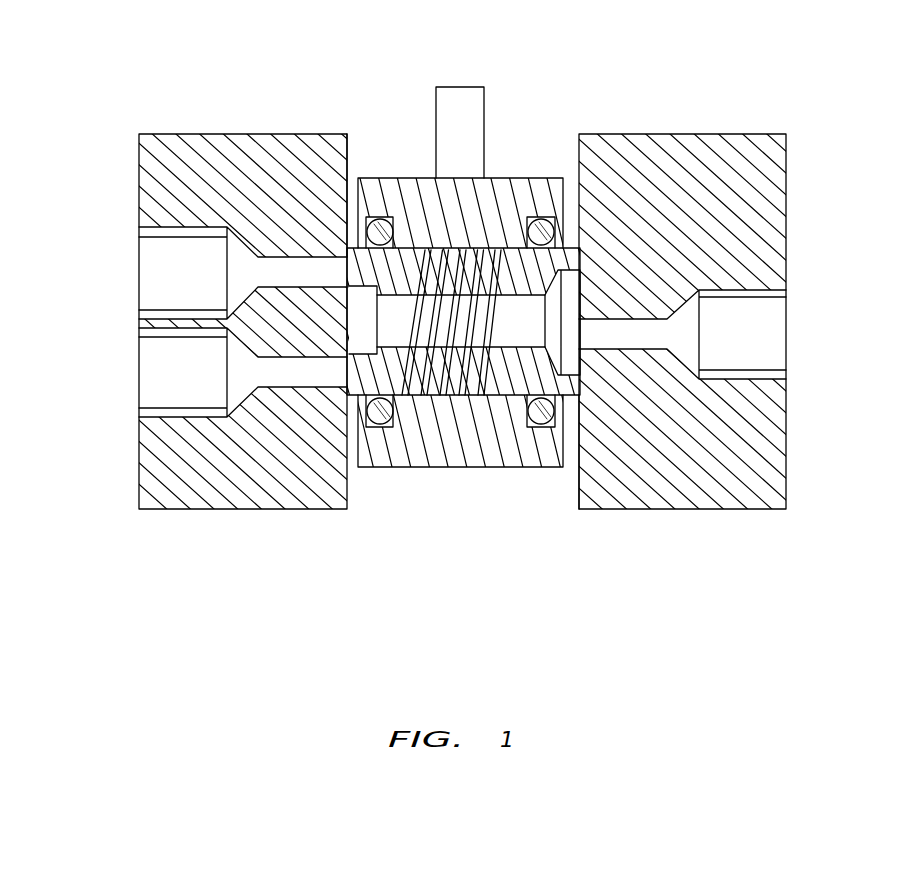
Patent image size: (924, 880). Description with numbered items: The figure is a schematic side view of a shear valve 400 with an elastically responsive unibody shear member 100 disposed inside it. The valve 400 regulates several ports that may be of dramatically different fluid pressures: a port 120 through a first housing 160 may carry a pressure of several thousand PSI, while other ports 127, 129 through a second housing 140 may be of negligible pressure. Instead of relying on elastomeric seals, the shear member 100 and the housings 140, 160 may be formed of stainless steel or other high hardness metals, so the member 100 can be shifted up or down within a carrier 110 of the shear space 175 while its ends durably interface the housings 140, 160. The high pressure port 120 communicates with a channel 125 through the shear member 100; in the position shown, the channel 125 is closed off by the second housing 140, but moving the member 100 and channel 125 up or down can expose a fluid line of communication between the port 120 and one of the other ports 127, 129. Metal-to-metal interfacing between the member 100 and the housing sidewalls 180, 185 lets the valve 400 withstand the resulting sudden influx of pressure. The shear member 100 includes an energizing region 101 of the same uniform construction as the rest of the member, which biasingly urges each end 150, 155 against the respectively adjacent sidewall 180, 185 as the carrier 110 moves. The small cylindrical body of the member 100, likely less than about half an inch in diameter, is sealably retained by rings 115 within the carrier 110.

The shear valve 400 is at (822, 63).
The elastically responsive unibody shear member 100 is at (418, 265).
The energizing region 101 is at (495, 246).
The carrier 110 is at (480, 450).
The rings 115 is at (541, 220).
The port 120 is at (773, 340).
The channel 125 is at (542, 334).
The port 127 is at (148, 271).
The port 129 is at (148, 378).
The second housing 140 is at (212, 493).
The end 150 is at (362, 378).
The end 155 is at (568, 377).
The first housing 160 is at (688, 490).
The shear space 175 is at (480, 502).
The housing sidewall 180 is at (349, 158).
The housing sidewall 185 is at (580, 480).